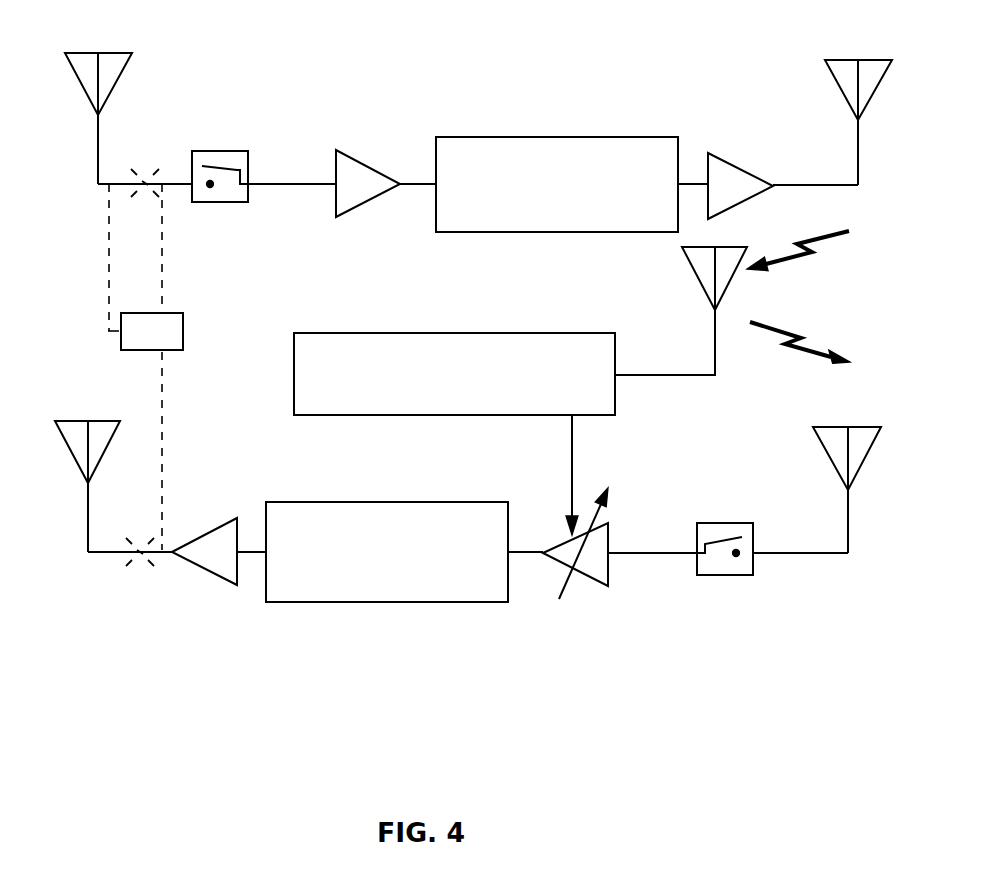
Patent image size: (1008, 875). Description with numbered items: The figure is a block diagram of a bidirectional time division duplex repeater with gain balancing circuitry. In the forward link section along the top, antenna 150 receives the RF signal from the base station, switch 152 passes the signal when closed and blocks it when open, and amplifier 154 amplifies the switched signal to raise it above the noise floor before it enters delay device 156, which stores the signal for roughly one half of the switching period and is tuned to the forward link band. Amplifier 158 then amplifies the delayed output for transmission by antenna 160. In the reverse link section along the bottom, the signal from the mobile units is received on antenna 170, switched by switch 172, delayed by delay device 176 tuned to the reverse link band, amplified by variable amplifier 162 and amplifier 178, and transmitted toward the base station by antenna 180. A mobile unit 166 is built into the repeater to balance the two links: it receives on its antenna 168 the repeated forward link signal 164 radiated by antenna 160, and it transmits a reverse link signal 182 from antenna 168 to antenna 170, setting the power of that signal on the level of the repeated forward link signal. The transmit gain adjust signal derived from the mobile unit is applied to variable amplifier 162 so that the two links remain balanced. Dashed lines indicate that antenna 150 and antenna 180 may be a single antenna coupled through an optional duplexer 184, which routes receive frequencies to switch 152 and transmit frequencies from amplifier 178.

The antenna 150 is at (122, 53).
The switch 152 is at (235, 151).
The amplifier 154 is at (350, 157).
The delay device 156 is at (497, 137).
The amplifier 158 is at (723, 158).
The antenna 160 is at (878, 60).
The variable amplifier 162 is at (608, 563).
The repeated forward link signal 164 is at (800, 262).
The mobile unit 166 is at (437, 333).
The antenna 168 is at (692, 265).
The antenna 170 is at (862, 427).
The switch 172 is at (730, 523).
The delay device 176 is at (443, 502).
The amplifier 178 is at (200, 570).
The antenna 180 is at (72, 421).
The reverse link signal 182 is at (783, 327).
The duplexer 184 is at (183, 322).